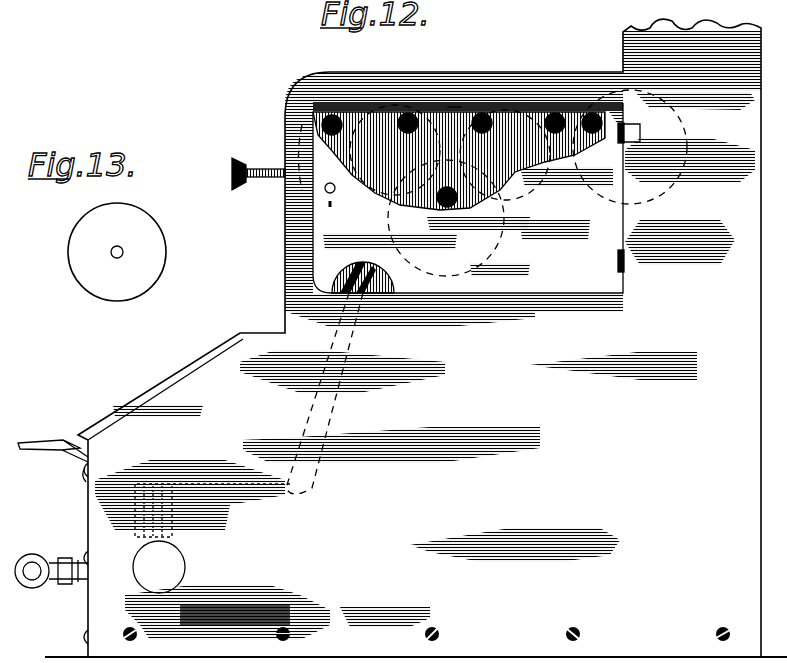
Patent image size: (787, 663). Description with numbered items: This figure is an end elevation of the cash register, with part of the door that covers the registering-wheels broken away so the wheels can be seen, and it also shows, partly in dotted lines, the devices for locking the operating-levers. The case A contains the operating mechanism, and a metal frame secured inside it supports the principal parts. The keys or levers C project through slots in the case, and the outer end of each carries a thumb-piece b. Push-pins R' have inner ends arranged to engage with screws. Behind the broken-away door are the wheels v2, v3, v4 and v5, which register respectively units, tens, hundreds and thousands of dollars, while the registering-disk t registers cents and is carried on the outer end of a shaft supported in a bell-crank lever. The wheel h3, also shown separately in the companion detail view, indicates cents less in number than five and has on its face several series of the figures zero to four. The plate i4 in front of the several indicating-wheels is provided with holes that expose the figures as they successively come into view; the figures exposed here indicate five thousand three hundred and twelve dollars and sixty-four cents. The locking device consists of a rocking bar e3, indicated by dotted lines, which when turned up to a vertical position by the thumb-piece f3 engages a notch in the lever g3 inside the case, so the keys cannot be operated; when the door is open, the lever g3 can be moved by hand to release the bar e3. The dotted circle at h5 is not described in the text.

In FIG. 12, the thousands-of-dollars registering wheel v5 is at (332, 113).
In FIG. 12, the hundreds-of-dollars registering wheel v4 is at (410, 111).
In FIG. 12, the plate i4 is at (455, 111).
In FIG. 12, the tens-of-dollars registering wheel v3 is at (486, 111).
In FIG. 12, the units-of-dollars registering wheel v2 is at (553, 111).
In FIG. 12, the registering-disk t is at (638, 195).
In FIG. 12, the push-pins R' is at (258, 166).
In FIG. 12, the wheel h5 is at (458, 197).
In FIG. 12, the lever g3 is at (372, 280).
In FIG. 12, the thumb-piece b is at (53, 442).
In FIG. 12, the keys or levers C is at (78, 456).
In FIG. 12, the rocking bar e3 is at (176, 531).
In FIG. 12, the thumb-piece f3 is at (159, 567).
In FIG. 12, the case A is at (420, 550).
In FIG. 13, the wheel h3 is at (80, 285).